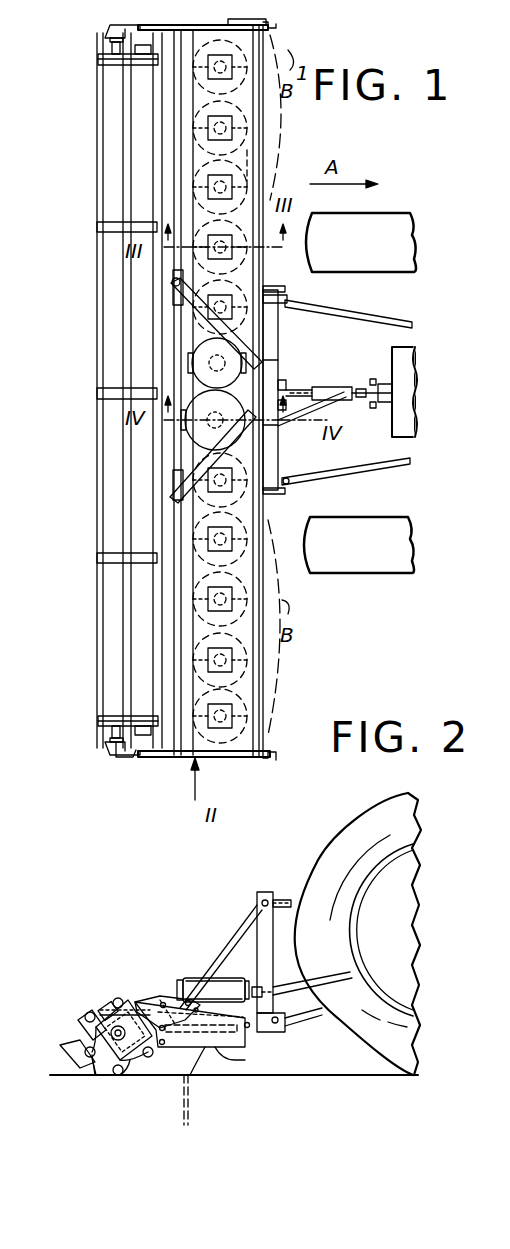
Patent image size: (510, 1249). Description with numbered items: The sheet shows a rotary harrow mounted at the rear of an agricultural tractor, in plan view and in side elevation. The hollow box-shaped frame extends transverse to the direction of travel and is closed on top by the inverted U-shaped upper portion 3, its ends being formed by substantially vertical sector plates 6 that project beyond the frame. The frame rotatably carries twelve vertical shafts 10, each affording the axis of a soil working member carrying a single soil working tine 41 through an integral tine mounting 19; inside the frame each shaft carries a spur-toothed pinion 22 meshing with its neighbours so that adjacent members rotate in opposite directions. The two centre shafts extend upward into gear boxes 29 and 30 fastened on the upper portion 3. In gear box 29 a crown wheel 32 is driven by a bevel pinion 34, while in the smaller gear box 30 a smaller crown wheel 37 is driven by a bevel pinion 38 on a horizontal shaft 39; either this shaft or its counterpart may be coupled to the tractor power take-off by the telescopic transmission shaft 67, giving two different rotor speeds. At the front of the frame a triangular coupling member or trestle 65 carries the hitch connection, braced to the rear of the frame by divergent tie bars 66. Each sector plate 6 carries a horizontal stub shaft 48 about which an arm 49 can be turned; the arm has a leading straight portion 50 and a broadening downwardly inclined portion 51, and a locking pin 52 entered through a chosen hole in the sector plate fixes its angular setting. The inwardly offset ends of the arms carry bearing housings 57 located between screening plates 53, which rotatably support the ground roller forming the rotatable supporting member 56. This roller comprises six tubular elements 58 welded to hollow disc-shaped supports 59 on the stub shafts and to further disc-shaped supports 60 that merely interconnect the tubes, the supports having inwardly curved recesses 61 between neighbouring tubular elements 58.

In FIG. 1, the upper portion 3 is at (232, 170).
In FIG. 1, the sector plates 6 is at (208, 24).
In FIG. 2, the sector plates 6 is at (175, 1048).
In FIG. 1, the shafts 10 is at (205, 612).
In FIG. 2, the tine mounting 19 is at (228, 1056).
In FIG. 1, the pinions 22 is at (174, 125).
In FIG. 1, the gear box 29 is at (270, 456).
In FIG. 2, the gear box 29 is at (200, 978).
In FIG. 1, the gear box 30 is at (235, 365).
In FIG. 1, the crown wheel 32 is at (275, 432).
In FIG. 1, the bevel pinion 34 is at (192, 433).
In FIG. 1, the crown wheel 37 is at (280, 328).
In FIG. 1, the bevel pinion 38 is at (192, 335).
In FIG. 1, the shaft 39 is at (290, 374).
In FIG. 2, the soil working tines 41 is at (178, 1102).
In FIG. 1, the stub shaft 48 is at (273, 26).
In FIG. 1, the arm 49 is at (140, 22).
In FIG. 2, the arm 49 is at (135, 996).
In FIG. 1, the straight portion 50 is at (248, 22).
In FIG. 2, the straight portion 50 is at (253, 985).
In FIG. 2, the downwardly inclined portion 51 is at (150, 998).
In FIG. 2, the locking pin 52 is at (158, 1000).
In FIG. 1, the screening plates 53 is at (114, 756).
In FIG. 2, the screening plates 53 is at (104, 1003).
In FIG. 1, the rotatable supporting member 56 is at (92, 324).
In FIG. 2, the rotatable supporting member 56 is at (86, 1010).
In FIG. 2, the bearing housings 57 is at (96, 1076).
In FIG. 1, the tubular elements 58 is at (128, 350).
In FIG. 2, the tubular elements 58 is at (88, 1052).
In FIG. 1, the disc-shaped supports 59 is at (98, 60).
In FIG. 1, the disc-shaped supports 60 is at (97, 227).
In FIG. 2, the recesses 61 is at (100, 1030).
In FIG. 1, the coupling member or trestle 65 is at (276, 296).
In FIG. 2, the coupling member or trestle 65 is at (268, 945).
In FIG. 1, the tie bars 66 is at (185, 488).
In FIG. 2, the tie bars 66 is at (240, 938).
In FIG. 1, the telescopic transmission shaft 67 is at (340, 425).
In FIG. 2, the telescopic transmission shaft 67 is at (300, 983).